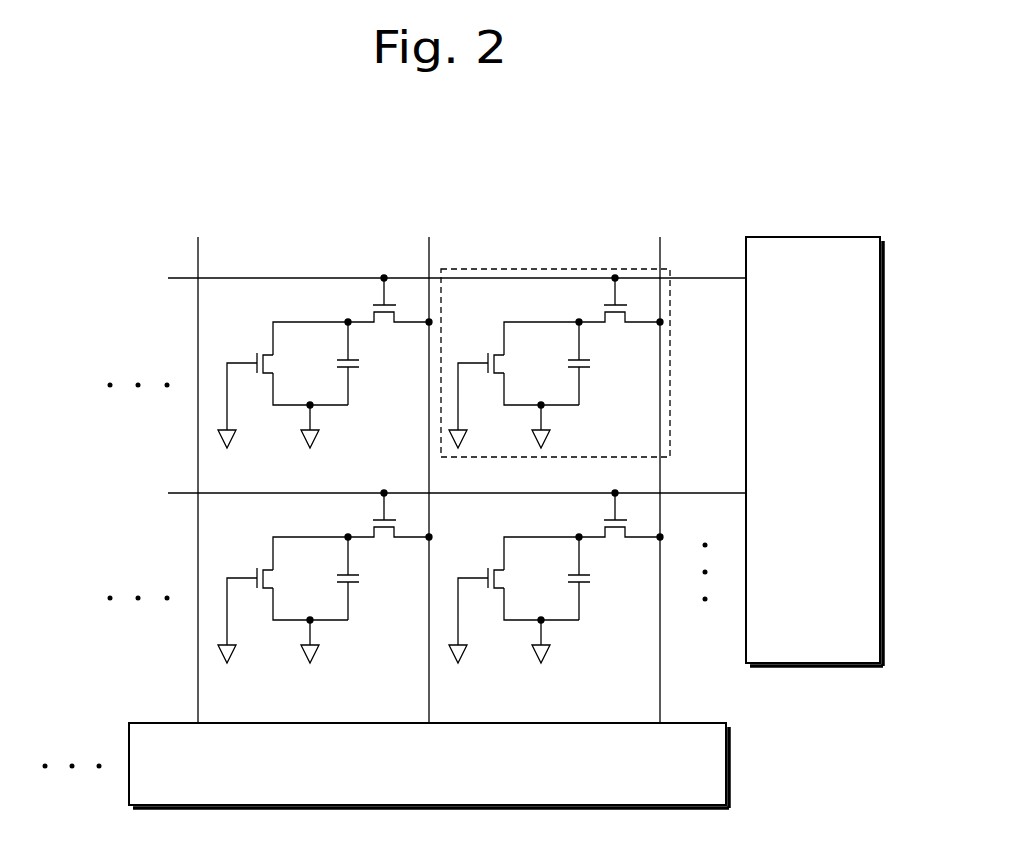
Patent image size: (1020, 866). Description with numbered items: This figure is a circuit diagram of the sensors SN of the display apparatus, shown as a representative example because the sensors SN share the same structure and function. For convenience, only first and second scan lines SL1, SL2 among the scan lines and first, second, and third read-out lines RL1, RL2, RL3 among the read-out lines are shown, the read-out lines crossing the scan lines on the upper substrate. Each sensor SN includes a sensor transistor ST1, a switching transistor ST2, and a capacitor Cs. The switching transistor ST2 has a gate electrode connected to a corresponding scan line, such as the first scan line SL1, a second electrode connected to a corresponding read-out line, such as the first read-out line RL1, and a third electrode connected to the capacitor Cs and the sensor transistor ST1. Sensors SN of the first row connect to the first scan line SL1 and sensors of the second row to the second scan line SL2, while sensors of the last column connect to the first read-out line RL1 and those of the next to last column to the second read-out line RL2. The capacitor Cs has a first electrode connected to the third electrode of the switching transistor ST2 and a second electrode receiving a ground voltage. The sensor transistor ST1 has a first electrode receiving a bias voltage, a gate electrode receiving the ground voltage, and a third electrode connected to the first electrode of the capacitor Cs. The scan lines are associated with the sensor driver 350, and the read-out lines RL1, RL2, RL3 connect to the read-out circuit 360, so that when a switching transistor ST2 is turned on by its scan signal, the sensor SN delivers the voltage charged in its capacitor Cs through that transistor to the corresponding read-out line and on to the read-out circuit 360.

The sensor SN is at (594, 268).
The sensor transistor ST1 is at (514, 385).
The switching transistor ST2 is at (619, 313).
The capacitor Cs is at (566, 363).
The first scan line SL1 is at (457, 268).
The second scan line SL2 is at (457, 481).
The first read-out line RL1 is at (681, 480).
The second read-out line RL2 is at (450, 480).
The third read-out line RL3 is at (219, 480).
The sensor driver 350 is at (814, 668).
The read-out circuit 360 is at (730, 763).